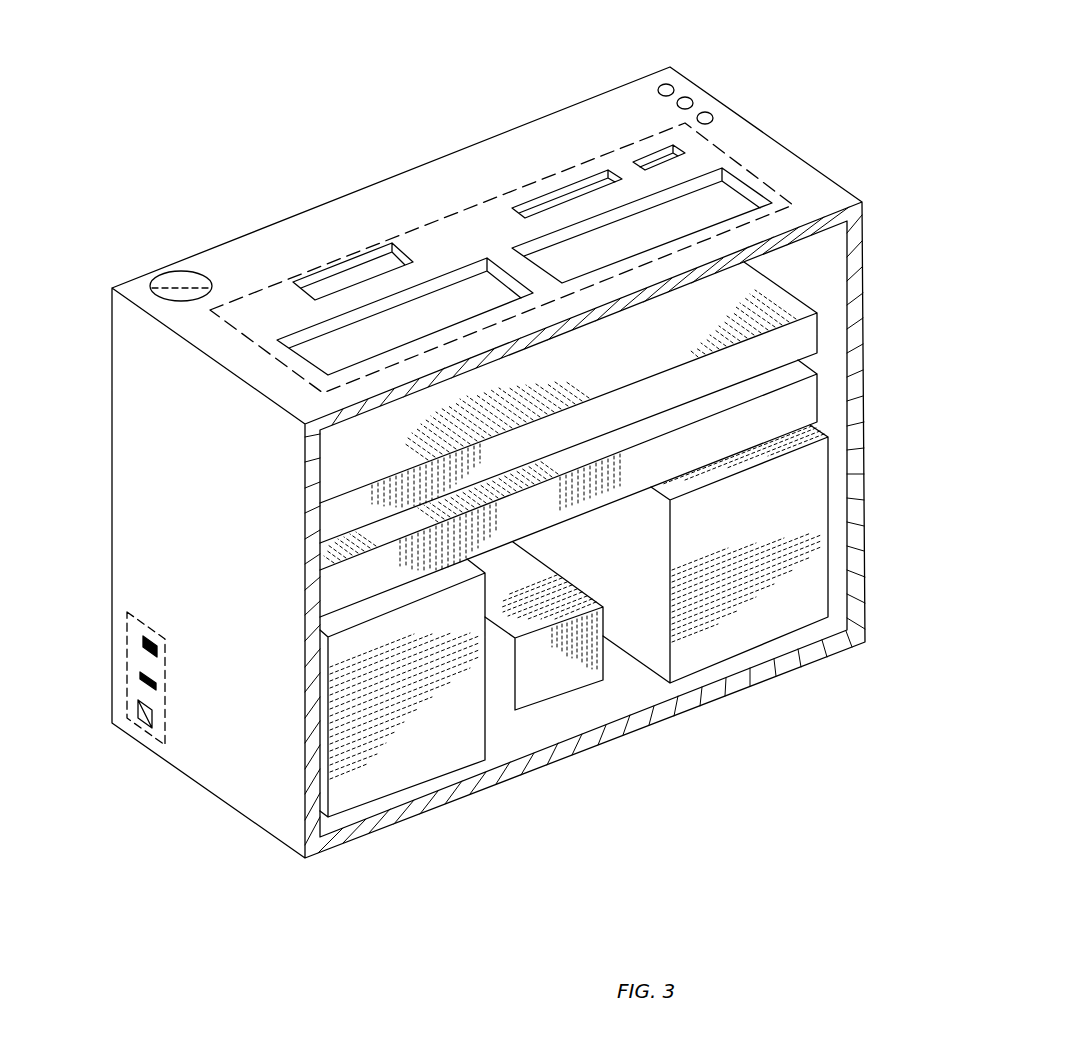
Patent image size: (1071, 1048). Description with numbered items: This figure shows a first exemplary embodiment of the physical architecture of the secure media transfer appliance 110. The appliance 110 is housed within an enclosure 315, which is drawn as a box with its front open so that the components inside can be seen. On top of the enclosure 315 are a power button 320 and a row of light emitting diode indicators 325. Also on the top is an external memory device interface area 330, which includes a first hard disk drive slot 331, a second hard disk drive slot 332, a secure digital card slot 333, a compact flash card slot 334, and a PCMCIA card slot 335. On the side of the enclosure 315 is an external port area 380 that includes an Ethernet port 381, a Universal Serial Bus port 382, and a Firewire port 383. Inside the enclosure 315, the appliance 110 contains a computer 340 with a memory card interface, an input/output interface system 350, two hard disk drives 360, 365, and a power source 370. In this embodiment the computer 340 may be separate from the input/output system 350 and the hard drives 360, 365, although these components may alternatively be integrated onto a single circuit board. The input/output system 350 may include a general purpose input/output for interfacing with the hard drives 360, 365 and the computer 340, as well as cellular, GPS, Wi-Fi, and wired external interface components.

The secure media transfer appliance 110 is at (244, 109).
The enclosure 315 is at (865, 297).
The power button 320 is at (181, 280).
The light emitting diode (LED) indicators 325 is at (703, 94).
The external memory device interface area 330 is at (725, 150).
The first hard disk drive slot 331 is at (460, 300).
The second hard disk drive slot 332 is at (740, 205).
The secure digital (SD) card slot 333 is at (660, 158).
The compact flash (CF) card slot 334 is at (565, 195).
The Personal Computer Memory Card International Association (PCMCIA) card slot 335 is at (355, 268).
The computer 340 is at (782, 345).
The input/output interface system 350 is at (782, 412).
The hard disk drive 360 is at (393, 758).
The hard disk drive 365 is at (733, 620).
The power source 370 is at (574, 653).
The external port area 380 is at (130, 610).
The Ethernet Category 5/6 (CAT 5/6) port 381 is at (146, 645).
The Universal Serial Bus (USB) 3 port 382 is at (143, 680).
The IEEE 1394a/b/c Firewire port 383 is at (138, 712).